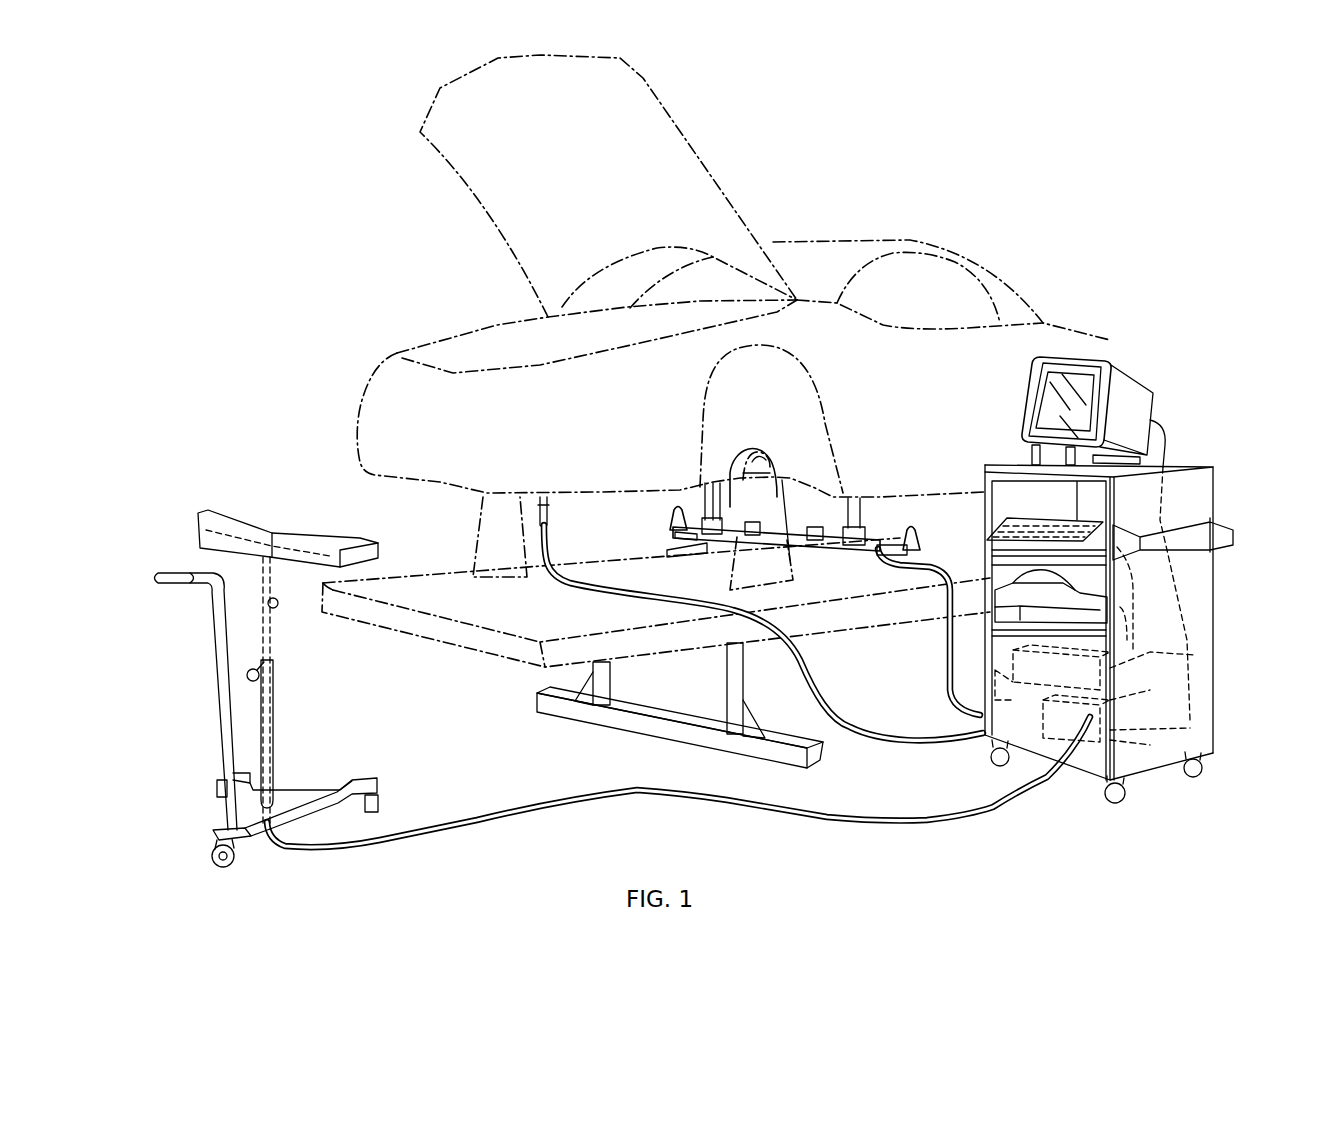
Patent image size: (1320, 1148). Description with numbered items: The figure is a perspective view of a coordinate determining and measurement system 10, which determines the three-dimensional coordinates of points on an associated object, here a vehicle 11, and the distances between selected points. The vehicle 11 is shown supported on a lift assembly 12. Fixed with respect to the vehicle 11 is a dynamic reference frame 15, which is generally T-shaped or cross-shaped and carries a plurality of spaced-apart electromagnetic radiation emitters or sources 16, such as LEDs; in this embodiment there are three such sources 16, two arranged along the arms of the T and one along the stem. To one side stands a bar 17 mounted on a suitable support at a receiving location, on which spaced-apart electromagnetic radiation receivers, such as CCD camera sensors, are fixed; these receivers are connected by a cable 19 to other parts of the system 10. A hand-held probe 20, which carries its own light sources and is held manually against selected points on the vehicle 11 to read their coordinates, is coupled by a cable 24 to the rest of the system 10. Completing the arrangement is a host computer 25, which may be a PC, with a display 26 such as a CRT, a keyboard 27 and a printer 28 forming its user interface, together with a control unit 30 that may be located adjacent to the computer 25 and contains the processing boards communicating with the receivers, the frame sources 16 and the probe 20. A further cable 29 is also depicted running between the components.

The coordinate determining and measurement system 10 is at (705, 467).
The vehicle 11 is at (972, 246).
The lift assembly 12 is at (508, 667).
The dynamic reference frame 15 is at (852, 555).
The electromagnetic radiation emitters or sources 16 is at (760, 527).
The bar 17 is at (309, 522).
The cable 19 is at (480, 822).
The hand-held probe 20 is at (552, 513).
The cable 24 is at (622, 591).
The host computer 25 is at (1093, 587).
The display 26 is at (1138, 410).
The keyboard 27 is at (1008, 532).
The printer 28 is at (1020, 595).
The cable 29 is at (948, 660).
The control unit 30 is at (1125, 742).